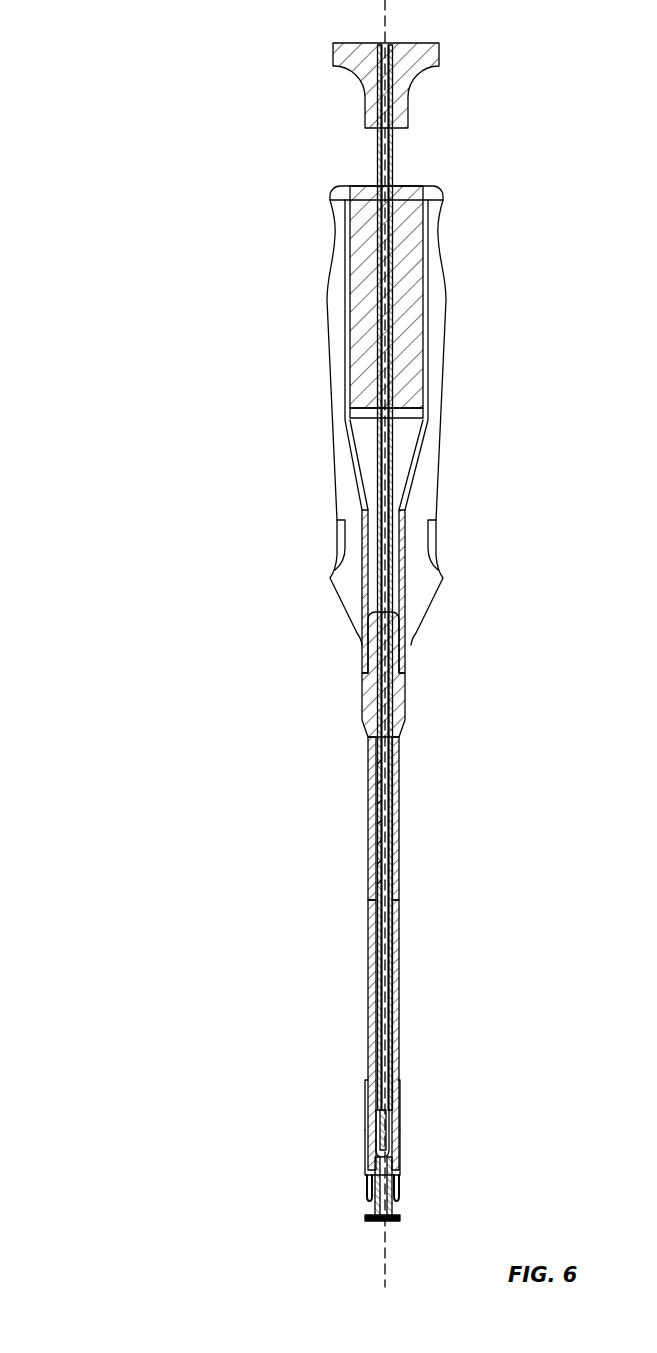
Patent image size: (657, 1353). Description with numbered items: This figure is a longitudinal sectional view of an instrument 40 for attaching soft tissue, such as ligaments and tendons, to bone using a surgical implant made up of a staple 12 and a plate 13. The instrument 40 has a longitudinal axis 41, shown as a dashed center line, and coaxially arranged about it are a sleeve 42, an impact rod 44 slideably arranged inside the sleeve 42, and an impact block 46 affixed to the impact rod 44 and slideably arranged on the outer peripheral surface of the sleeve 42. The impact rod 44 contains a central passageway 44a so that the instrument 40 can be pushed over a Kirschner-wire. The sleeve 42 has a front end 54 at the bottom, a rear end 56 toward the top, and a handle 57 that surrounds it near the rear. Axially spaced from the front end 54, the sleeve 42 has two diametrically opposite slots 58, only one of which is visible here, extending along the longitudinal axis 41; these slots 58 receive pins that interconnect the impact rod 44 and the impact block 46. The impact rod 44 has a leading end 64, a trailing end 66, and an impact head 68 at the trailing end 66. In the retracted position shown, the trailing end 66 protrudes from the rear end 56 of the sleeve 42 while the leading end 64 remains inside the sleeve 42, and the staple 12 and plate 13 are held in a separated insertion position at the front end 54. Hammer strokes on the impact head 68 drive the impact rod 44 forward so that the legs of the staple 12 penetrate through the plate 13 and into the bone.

The instrument 40 is at (112, 46).
The longitudinal axis 41 is at (382, 1262).
The impact head 68 is at (433, 58).
The trailing end 66 is at (378, 152).
The handle 57 is at (333, 298).
The rear end 56 is at (397, 622).
The impact rod 44 is at (393, 772).
The central passageway 44a is at (381, 825).
The sleeve 42 is at (398, 920).
The leading end 64 is at (400, 1093).
The impact block 46 is at (400, 1170).
The slots 58 is at (374, 1137).
The staple 12 is at (367, 1186).
The front end 54 is at (397, 1205).
The plate 13 is at (400, 1222).